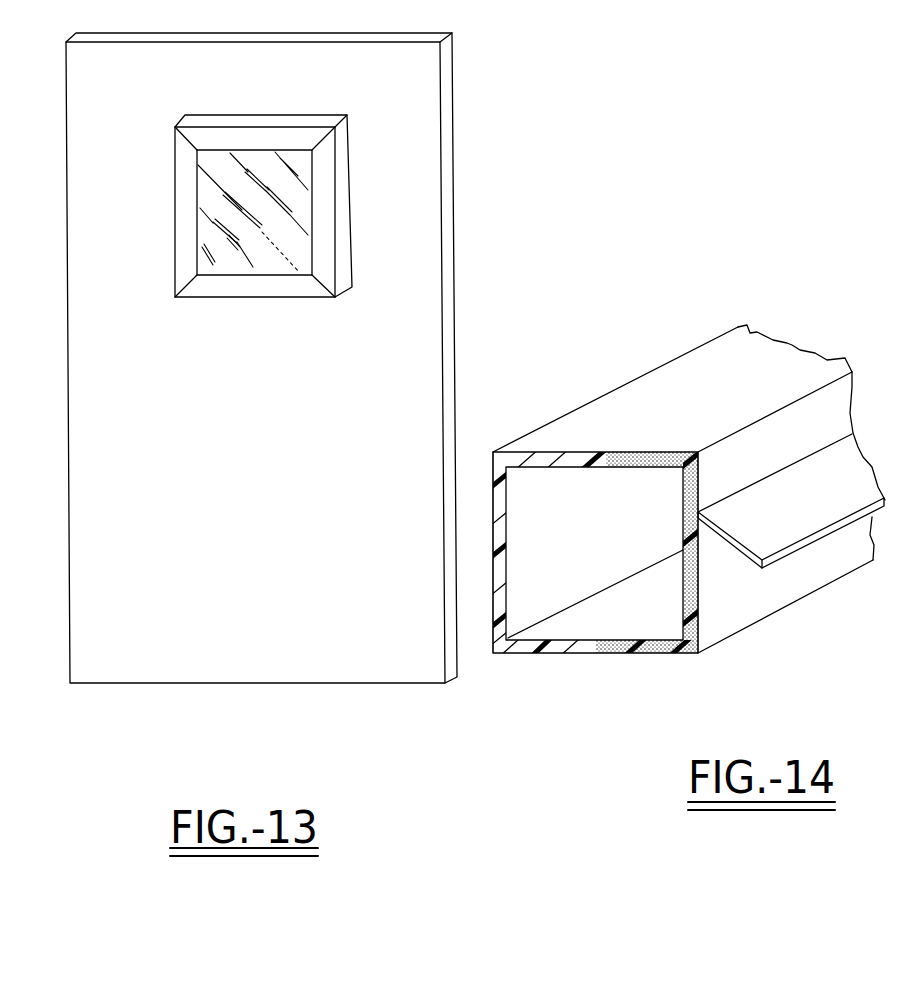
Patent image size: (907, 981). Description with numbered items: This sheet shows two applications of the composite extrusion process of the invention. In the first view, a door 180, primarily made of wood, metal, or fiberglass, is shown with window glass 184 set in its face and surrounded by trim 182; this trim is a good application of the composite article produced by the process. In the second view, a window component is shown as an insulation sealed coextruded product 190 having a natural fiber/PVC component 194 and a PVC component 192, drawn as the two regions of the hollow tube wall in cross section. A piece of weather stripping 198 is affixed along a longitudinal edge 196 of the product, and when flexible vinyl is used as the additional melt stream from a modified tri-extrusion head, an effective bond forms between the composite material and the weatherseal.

In FIG. 13, the door 180 is at (183, 683).
In FIG. 13, the trim 182 is at (328, 185).
In FIG. 13, the window glass 184 is at (290, 247).
In FIG. 14, the insulation sealed coextruded product 190 is at (652, 372).
In FIG. 14, the PVC component 192 is at (538, 652).
In FIG. 14, the natural fiber/PVC component 194 is at (698, 598).
In FIG. 14, the longitudinal edge 196 is at (810, 456).
In FIG. 14, the weather stripping 198 is at (825, 537).